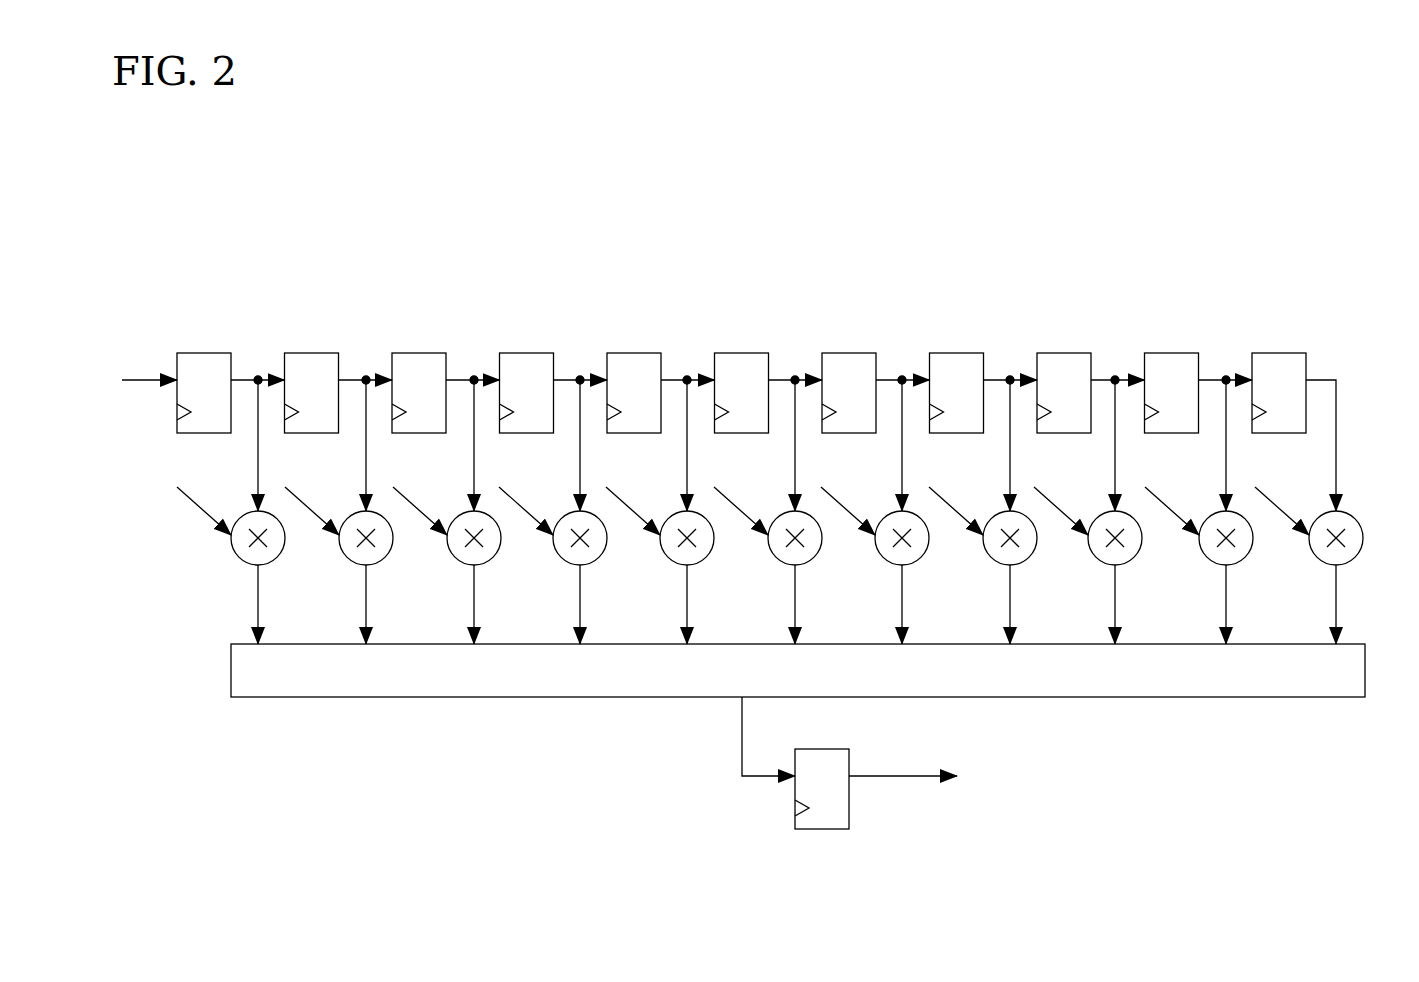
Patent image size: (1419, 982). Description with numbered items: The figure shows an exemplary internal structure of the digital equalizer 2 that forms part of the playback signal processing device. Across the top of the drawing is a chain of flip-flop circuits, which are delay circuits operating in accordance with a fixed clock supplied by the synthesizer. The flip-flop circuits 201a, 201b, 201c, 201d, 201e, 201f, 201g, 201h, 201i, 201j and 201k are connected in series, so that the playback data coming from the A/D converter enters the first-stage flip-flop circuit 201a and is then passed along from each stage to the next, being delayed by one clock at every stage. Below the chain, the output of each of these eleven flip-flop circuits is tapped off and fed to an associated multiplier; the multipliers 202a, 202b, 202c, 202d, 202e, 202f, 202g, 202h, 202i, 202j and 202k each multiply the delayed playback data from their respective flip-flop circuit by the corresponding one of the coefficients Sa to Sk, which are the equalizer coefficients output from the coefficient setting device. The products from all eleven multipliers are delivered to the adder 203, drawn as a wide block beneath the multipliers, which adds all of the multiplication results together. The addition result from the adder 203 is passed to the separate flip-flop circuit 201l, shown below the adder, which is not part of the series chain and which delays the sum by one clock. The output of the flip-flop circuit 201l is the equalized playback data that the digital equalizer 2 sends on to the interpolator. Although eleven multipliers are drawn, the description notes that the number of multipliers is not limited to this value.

The digital equalizer 2 is at (693, 241).
The flip-flop circuit 201a is at (205, 353).
The flip-flop circuit 201b is at (312, 353).
The flip-flop circuit 201c is at (420, 353).
The flip-flop circuit 201d is at (528, 353).
The flip-flop circuit 201e is at (635, 353).
The flip-flop circuit 201f is at (742, 353).
The flip-flop circuit 201g is at (850, 353).
The flip-flop circuit 201h is at (958, 353).
The flip-flop circuit 201i is at (1065, 353).
The flip-flop circuit 201j is at (1172, 353).
The flip-flop circuit 201k is at (1280, 353).
The flip-flop circuit 201l is at (838, 749).
The multiplier 202a is at (250, 512).
The multiplier 202b is at (358, 512).
The multiplier 202c is at (465, 512).
The multiplier 202d is at (572, 512).
The multiplier 202e is at (679, 512).
The multiplier 202f is at (785, 512).
The multiplier 202g is at (894, 512).
The multiplier 202h is at (1002, 512).
The multiplier 202i is at (1103, 512).
The multiplier 202j is at (1214, 512).
The multiplier 202k is at (1328, 519).
The adder 203 is at (1338, 697).